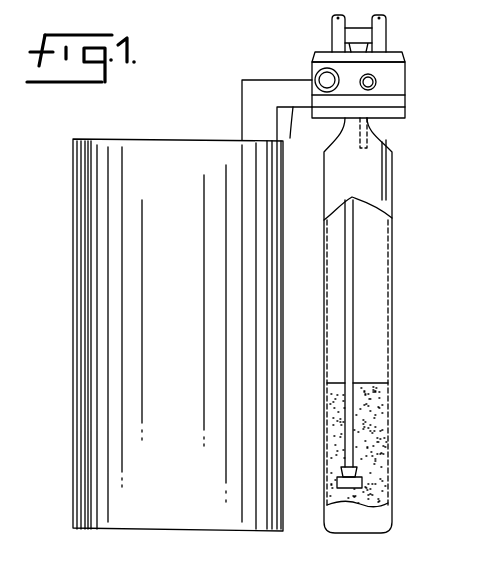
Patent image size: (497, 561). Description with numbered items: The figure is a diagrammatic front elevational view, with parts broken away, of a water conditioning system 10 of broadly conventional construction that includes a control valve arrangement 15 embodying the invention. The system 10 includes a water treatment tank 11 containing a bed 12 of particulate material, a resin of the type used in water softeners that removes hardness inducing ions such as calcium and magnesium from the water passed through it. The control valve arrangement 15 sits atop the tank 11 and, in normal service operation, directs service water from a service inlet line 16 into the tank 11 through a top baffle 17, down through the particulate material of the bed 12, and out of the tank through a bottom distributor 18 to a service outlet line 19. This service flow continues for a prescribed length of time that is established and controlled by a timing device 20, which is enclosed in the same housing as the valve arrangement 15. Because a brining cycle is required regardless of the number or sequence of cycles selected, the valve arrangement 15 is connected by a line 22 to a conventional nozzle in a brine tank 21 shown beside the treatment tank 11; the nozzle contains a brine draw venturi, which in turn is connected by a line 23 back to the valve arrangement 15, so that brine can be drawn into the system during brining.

The water conditioning system 10 is at (402, 238).
The water treatment tank 11 is at (390, 336).
The bed of particulate material 12 is at (378, 428).
The control valve arrangement 15 is at (405, 62).
The service inlet line 16 is at (386, 22).
The top baffle 17 is at (367, 133).
The bottom distributor 18 is at (362, 481).
The service outlet line 19 is at (333, 22).
The timing device 20 is at (318, 75).
The brine tank 21 is at (73, 405).
The line 22 is at (306, 138).
The line 23 is at (242, 104).